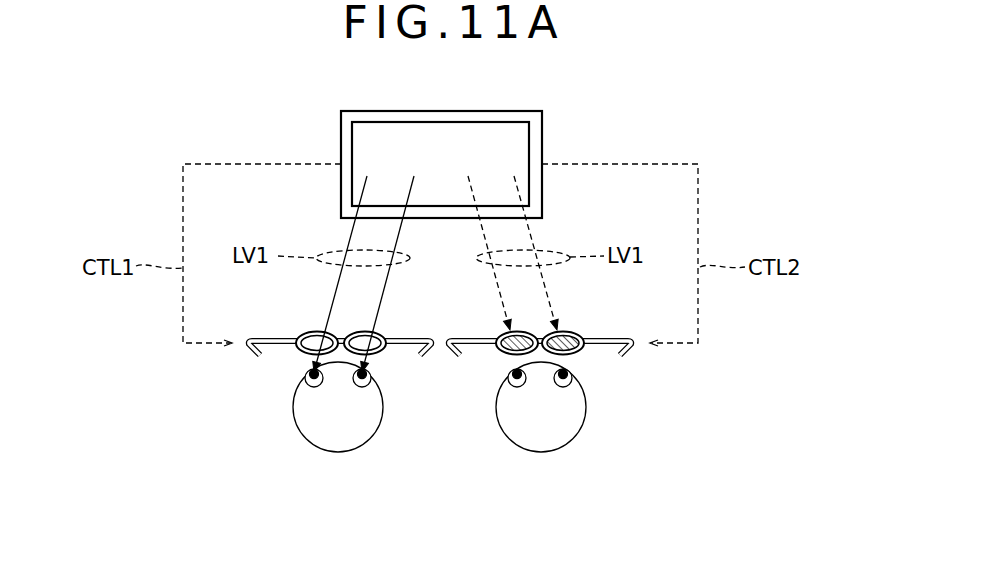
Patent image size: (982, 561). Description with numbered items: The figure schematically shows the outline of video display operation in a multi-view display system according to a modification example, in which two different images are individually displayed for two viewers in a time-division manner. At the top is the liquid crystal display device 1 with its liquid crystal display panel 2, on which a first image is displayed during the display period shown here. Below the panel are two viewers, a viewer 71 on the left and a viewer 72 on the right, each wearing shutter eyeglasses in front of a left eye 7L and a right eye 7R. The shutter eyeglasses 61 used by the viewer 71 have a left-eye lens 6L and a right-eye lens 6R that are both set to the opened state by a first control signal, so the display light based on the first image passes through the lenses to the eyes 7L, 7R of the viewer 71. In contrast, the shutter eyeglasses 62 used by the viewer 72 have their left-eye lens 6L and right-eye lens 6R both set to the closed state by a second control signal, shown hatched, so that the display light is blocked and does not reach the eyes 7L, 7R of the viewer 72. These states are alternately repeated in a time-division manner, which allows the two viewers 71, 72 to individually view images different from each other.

The liquid crystal display device 1 is at (561, 114).
The liquid crystal display panel 2 is at (519, 136).
The shutter eyeglasses 61 is at (258, 336).
The shutter eyeglasses 62 is at (629, 336).
The left-eye lens 6L is at (298, 334).
The right-eye lens 6R is at (383, 334).
The left eye 7L is at (296, 377).
The right eye 7R is at (380, 375).
The viewer 71 is at (335, 472).
The viewer 72 is at (537, 472).